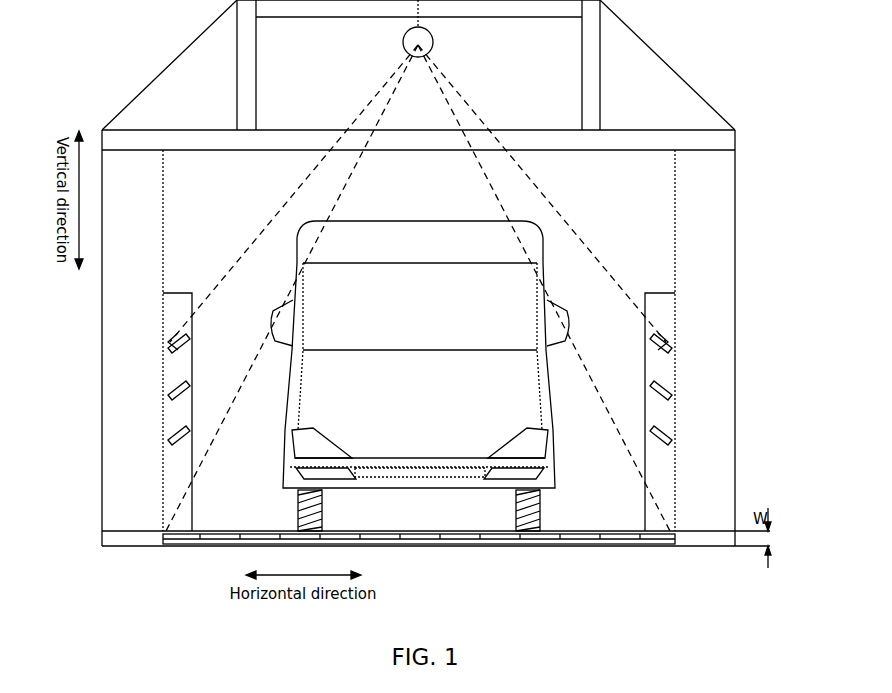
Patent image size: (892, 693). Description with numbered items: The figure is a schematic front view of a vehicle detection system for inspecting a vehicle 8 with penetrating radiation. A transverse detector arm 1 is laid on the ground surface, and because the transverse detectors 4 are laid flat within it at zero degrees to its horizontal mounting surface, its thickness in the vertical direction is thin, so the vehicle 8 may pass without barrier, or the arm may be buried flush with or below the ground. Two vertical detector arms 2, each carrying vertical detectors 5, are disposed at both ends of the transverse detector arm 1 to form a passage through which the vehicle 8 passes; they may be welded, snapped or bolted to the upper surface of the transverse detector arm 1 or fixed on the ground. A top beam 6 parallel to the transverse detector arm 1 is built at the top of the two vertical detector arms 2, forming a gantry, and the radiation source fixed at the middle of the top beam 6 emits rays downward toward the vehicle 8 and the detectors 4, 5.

The transverse detector arm 1 is at (705, 547).
The vertical detector arm 2 is at (163, 415).
The transverse detector 4 is at (604, 546).
The vertical detector 5 is at (170, 443).
The top beam 6 is at (698, 142).
The vehicle 8 is at (421, 221).